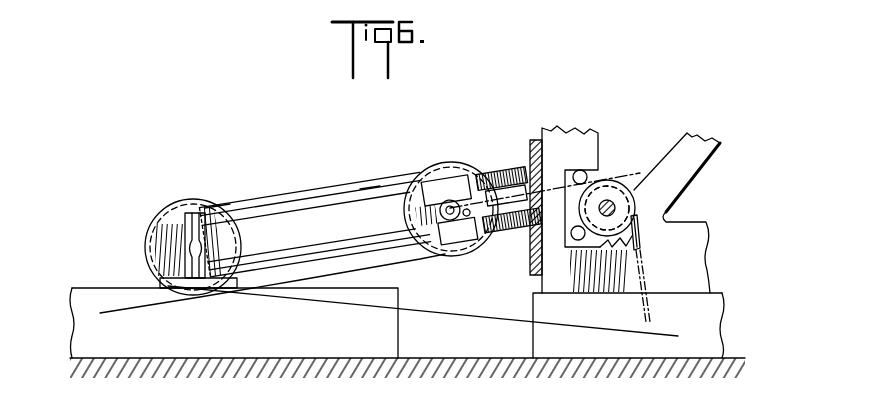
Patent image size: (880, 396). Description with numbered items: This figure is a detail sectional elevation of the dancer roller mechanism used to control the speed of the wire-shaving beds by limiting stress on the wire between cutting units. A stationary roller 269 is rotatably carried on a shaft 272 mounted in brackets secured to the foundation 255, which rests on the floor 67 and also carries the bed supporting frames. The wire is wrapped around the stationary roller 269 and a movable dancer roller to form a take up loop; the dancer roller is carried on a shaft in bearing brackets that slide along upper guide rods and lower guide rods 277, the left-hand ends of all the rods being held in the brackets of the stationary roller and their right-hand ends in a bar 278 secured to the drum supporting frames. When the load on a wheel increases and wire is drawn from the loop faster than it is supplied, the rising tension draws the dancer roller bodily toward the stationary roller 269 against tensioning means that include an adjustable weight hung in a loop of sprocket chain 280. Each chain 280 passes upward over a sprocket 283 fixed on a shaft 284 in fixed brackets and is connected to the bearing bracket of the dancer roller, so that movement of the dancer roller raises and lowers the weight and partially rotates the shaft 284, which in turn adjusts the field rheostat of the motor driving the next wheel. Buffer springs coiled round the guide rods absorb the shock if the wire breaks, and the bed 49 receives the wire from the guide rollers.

The bed line 49 is at (455, 313).
The floor 67 is at (278, 358).
The foundation 255 is at (83, 321).
The stationary roller 269 is at (178, 202).
The shaft 272 is at (184, 246).
The lower guide rods 277 is at (343, 258).
The bar 278 is at (533, 140).
The sprocket chains 280 is at (641, 278).
The sprocket 283 is at (607, 183).
The shaft 284 is at (632, 200).